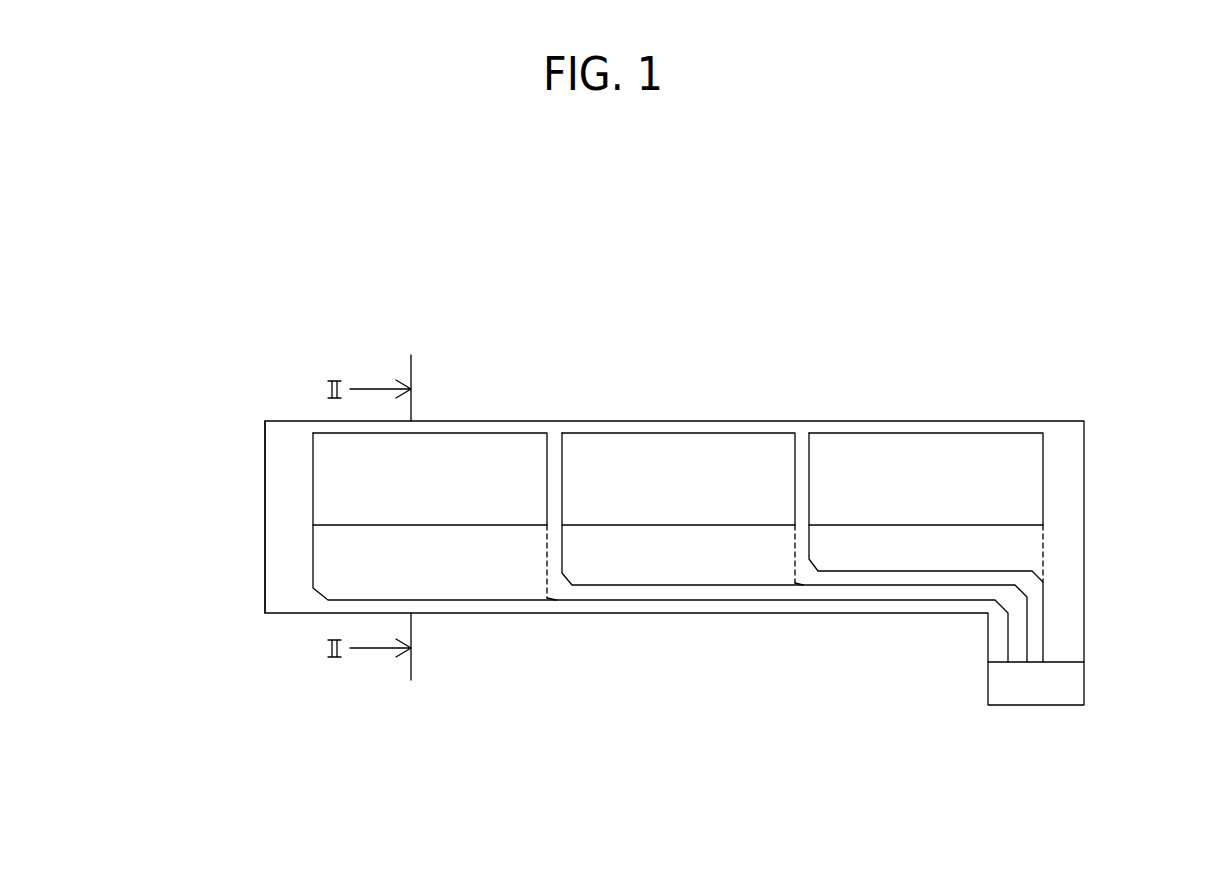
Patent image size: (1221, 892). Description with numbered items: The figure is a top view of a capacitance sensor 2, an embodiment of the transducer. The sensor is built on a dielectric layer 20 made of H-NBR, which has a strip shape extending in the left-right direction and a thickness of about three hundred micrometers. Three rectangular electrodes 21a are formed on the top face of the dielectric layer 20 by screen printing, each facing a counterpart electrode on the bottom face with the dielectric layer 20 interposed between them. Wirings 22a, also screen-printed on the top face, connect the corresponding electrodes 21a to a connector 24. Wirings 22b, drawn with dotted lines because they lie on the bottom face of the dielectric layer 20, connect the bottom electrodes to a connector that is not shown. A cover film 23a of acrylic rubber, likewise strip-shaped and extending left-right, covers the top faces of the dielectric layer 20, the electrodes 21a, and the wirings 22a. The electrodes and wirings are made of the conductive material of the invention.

The capacitance sensor 2 is at (858, 345).
The dielectric layer 20 is at (265, 495).
The electrode 21a is at (675, 432).
The wiring 22a is at (619, 600).
The wiring 22b is at (545, 568).
The cover film 23a is at (282, 462).
The connector 24 is at (1070, 682).